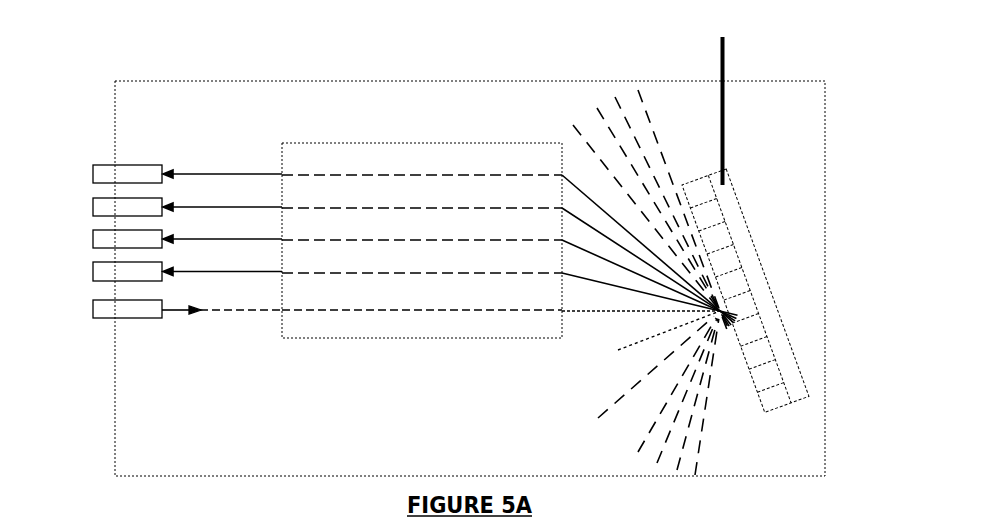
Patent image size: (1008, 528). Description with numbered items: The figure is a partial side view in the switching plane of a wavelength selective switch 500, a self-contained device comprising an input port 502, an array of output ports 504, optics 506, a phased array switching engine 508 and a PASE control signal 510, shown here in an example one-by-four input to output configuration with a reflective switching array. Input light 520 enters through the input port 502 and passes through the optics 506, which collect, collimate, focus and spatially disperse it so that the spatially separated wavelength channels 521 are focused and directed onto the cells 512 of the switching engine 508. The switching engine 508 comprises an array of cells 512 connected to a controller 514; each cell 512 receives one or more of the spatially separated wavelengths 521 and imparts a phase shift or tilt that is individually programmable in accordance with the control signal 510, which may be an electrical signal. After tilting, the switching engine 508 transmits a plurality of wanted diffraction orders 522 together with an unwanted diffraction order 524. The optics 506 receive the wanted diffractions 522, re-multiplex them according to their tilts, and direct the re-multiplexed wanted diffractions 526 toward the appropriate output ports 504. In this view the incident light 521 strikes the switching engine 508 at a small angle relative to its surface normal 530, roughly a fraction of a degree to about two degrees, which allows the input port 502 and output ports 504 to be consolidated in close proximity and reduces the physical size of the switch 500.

The wavelength selective switch 500 is at (185, 81).
The input port 502 is at (108, 320).
The array of output ports 504 is at (96, 156).
The optics 506 is at (373, 340).
The phased array switching engine 508 is at (791, 302).
The PASE control signal 510 is at (727, 52).
The cells 512 is at (767, 346).
The controller 514 is at (768, 281).
The input light 520 is at (232, 312).
The spatially separated wavelength channels 521 is at (625, 313).
The wanted diffractions of light 522 is at (583, 192).
The unwanted diffraction order 524 is at (642, 98).
The re-multiplexed wanted diffractions 526 is at (247, 173).
The surface normal 530 is at (645, 340).